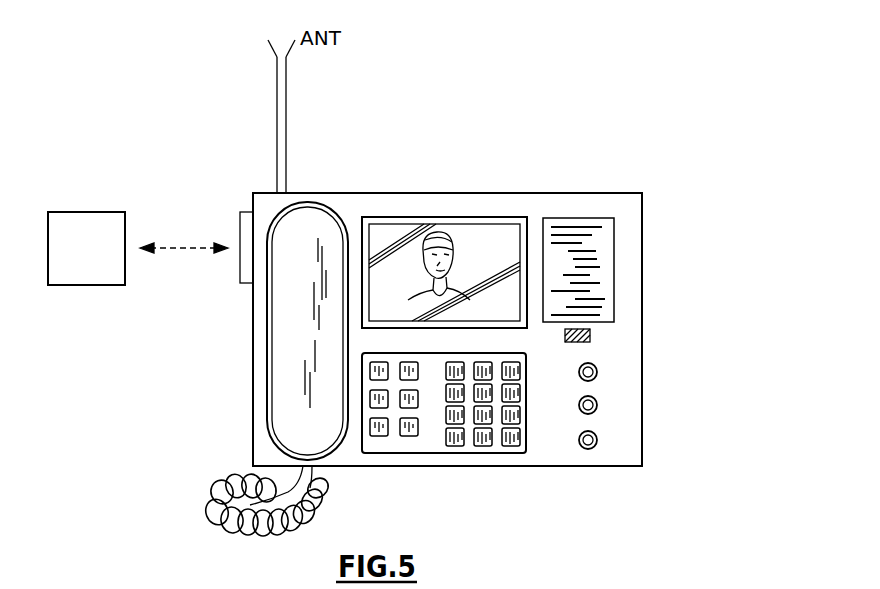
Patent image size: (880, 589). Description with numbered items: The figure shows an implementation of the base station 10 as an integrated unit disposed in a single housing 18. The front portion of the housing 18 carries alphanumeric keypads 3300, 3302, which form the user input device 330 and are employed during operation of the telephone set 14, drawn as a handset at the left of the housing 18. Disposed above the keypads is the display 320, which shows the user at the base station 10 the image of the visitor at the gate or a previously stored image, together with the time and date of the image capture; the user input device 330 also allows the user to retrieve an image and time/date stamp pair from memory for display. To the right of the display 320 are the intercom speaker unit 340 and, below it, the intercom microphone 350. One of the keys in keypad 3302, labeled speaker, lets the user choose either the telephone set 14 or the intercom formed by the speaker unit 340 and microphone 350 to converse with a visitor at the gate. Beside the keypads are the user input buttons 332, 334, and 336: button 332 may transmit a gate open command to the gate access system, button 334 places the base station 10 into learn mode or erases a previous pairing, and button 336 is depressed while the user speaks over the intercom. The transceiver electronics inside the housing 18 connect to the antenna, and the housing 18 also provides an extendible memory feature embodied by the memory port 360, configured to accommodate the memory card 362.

The base station 10 is at (690, 186).
The telephone set 14 is at (286, 322).
The housing 18 is at (595, 193).
The display 320 is at (484, 240).
The user input device 330 is at (480, 433).
The user input button 332 is at (597, 367).
The user input button 334 is at (597, 400).
The user input button 336 is at (597, 435).
The intercom speaker unit 340 is at (607, 265).
The intercom microphone 350 is at (592, 339).
The memory port 360 is at (240, 222).
The memory card 362 is at (88, 222).
The alphanumeric keypad 3300 is at (460, 446).
The alphanumeric keypad 3302 is at (379, 436).